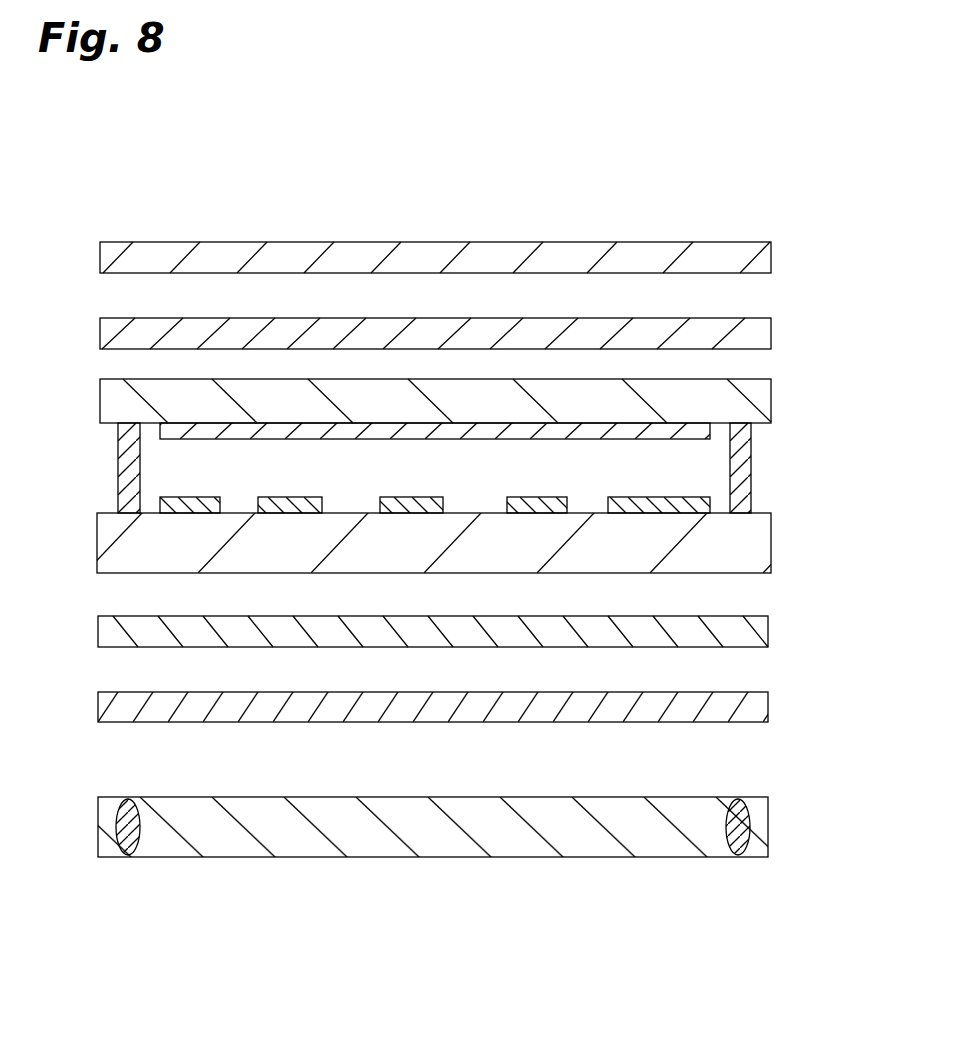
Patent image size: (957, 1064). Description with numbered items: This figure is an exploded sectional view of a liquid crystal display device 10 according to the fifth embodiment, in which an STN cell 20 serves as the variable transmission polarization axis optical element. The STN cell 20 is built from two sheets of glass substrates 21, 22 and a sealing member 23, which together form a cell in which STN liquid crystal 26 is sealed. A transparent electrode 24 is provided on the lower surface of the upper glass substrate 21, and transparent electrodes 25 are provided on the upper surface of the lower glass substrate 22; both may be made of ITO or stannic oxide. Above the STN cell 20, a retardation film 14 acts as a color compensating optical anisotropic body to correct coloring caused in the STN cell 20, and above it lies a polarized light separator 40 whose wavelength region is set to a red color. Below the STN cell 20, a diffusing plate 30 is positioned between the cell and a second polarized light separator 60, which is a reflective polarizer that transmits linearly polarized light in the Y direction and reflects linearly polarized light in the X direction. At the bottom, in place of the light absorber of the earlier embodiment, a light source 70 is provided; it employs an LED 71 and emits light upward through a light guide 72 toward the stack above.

The liquid crystal display device 10 is at (641, 199).
The polarized light separator 40 is at (771, 258).
The retardation film 14 is at (771, 335).
The glass substrate 21 is at (771, 393).
The STN cell 20 is at (792, 432).
The transparent electrode 24 is at (503, 440).
The sealing member 23 is at (752, 487).
The STN liquid crystal 26 is at (677, 467).
The transparent electrodes 25 is at (522, 498).
The glass substrate 22 is at (756, 552).
The diffusing plate 30 is at (758, 628).
The polarized light separator 60 is at (760, 707).
The light source 70 is at (770, 830).
The LED 71 is at (750, 813).
The light guide 72 is at (584, 844).